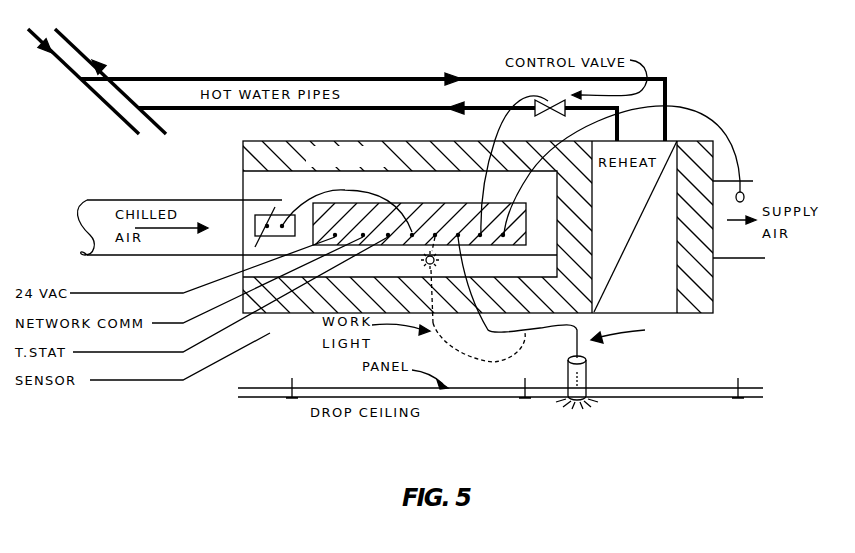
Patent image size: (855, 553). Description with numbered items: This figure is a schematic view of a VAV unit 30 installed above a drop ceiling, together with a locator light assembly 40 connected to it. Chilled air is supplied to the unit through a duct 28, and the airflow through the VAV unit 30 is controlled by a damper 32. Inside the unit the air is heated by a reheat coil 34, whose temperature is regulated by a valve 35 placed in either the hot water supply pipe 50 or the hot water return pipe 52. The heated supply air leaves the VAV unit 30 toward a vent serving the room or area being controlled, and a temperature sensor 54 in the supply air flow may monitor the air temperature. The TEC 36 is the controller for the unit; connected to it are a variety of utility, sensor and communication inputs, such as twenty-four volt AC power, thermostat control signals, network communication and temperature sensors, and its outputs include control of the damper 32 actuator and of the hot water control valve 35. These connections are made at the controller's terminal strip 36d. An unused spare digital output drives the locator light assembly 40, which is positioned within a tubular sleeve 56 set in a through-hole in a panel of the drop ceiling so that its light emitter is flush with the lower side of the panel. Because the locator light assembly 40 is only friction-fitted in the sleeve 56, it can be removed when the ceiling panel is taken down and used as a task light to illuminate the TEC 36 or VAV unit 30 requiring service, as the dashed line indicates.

The duct 28 is at (143, 200).
The VAV unit 30 is at (713, 292).
The damper 32 is at (252, 242).
The reheat coil 34 is at (635, 226).
The valve 35 is at (548, 112).
The TEC 36 is at (400, 224).
The terminal strip 36d is at (463, 202).
The locator light assembly 40 is at (629, 333).
The hot water supply pipe 50 is at (235, 78).
The hot water return pipe 52 is at (237, 110).
The temperature sensor 54 is at (747, 197).
The tubular sleeve 56 is at (587, 368).